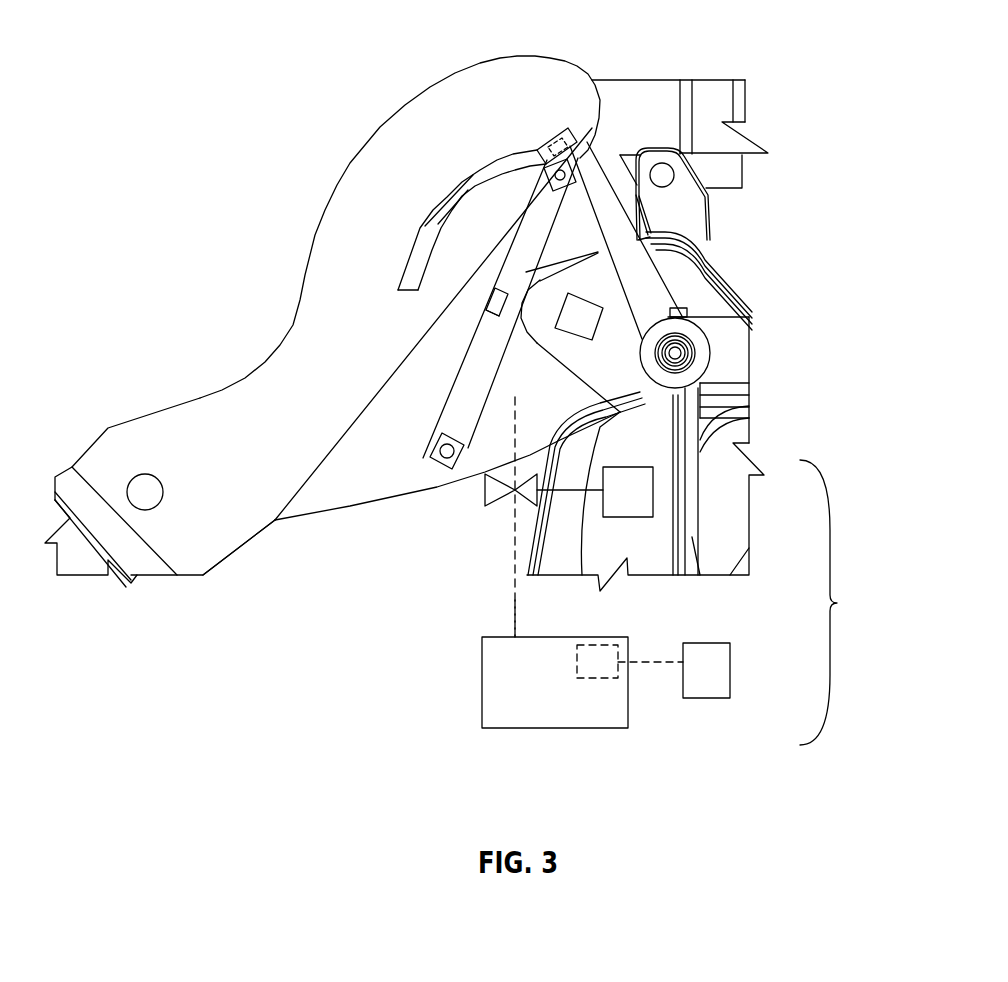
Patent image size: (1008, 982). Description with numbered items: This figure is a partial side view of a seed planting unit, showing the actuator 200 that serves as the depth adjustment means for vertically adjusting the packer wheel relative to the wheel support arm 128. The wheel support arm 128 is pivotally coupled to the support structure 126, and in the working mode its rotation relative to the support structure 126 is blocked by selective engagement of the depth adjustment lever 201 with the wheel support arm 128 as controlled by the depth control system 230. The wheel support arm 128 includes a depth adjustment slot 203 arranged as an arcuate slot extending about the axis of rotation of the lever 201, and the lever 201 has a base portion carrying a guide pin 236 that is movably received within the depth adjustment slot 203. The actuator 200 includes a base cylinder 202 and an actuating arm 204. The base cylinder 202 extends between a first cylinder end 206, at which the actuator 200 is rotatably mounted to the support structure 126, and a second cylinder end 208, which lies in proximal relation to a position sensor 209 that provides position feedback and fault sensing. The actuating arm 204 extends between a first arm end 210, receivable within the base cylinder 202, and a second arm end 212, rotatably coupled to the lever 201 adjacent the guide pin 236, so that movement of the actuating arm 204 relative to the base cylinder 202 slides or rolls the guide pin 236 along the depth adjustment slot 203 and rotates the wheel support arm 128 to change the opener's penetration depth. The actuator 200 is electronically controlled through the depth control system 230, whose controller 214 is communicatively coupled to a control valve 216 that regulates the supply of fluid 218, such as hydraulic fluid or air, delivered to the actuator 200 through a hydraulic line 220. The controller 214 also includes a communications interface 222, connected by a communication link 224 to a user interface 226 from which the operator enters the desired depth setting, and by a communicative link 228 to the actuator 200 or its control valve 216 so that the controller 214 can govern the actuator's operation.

The support structure 126 is at (313, 493).
The wheel support arm 128 is at (184, 421).
The actuator 200 is at (486, 362).
The depth adjustment lever 201 is at (637, 270).
The base cylinder 202 is at (503, 335).
The depth adjustment slot 203 is at (411, 247).
The actuating arm 204 is at (540, 208).
The first cylinder end 206 is at (437, 462).
The second cylinder end 208 is at (500, 287).
The position sensor 209 is at (490, 307).
The first arm end 210 is at (592, 328).
The second arm end 212 is at (585, 135).
The controller 214 is at (546, 718).
The control valve 216 is at (493, 495).
The fluid 218 is at (640, 497).
The hydraulic line 220 is at (522, 430).
The communications interface 222 is at (602, 660).
The communication link 224 is at (653, 662).
The user interface 226 is at (707, 667).
The communicative link 228 is at (512, 612).
The depth control system 230 is at (840, 602).
The guide pin 236 is at (556, 130).